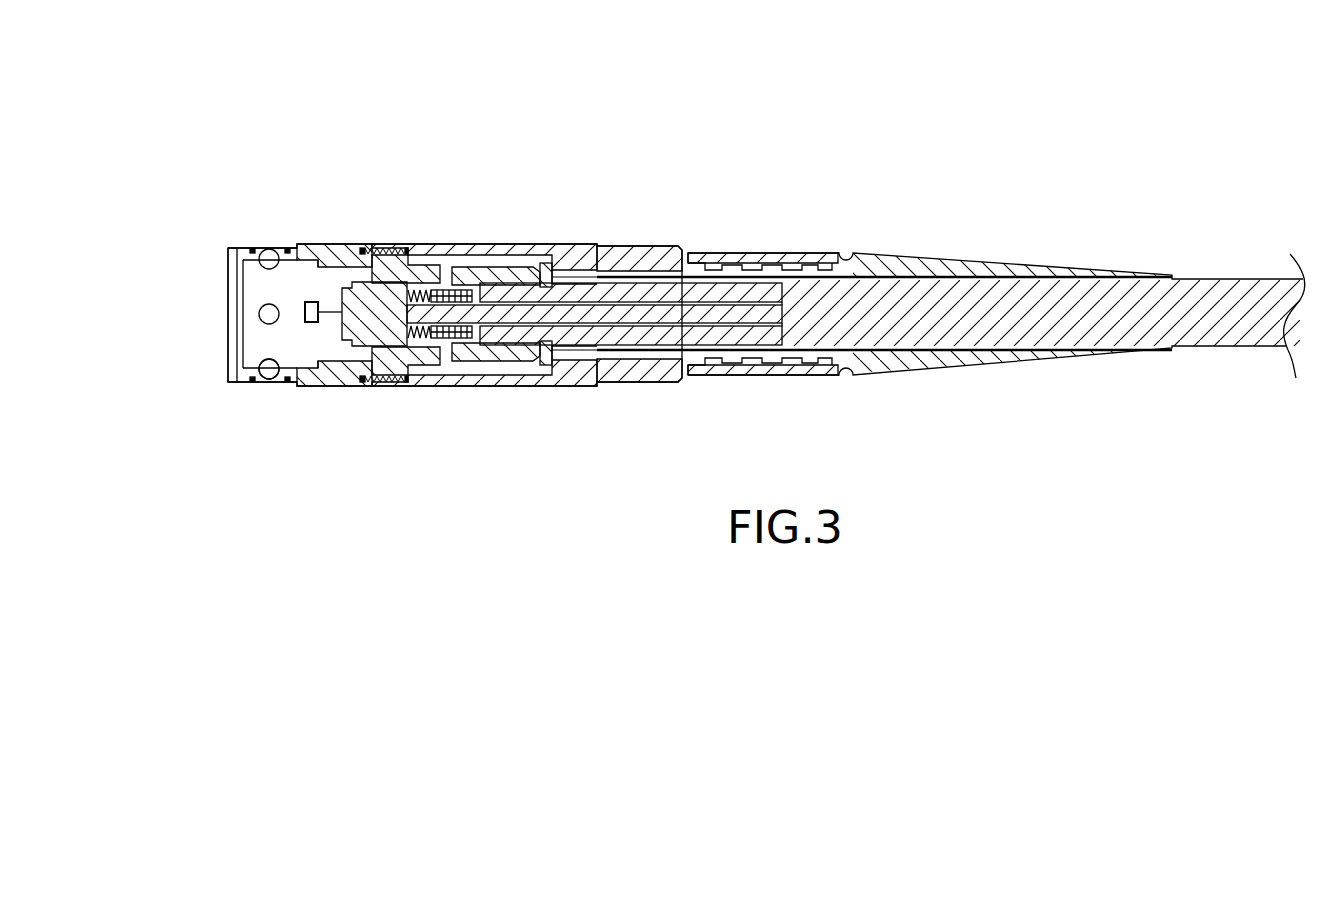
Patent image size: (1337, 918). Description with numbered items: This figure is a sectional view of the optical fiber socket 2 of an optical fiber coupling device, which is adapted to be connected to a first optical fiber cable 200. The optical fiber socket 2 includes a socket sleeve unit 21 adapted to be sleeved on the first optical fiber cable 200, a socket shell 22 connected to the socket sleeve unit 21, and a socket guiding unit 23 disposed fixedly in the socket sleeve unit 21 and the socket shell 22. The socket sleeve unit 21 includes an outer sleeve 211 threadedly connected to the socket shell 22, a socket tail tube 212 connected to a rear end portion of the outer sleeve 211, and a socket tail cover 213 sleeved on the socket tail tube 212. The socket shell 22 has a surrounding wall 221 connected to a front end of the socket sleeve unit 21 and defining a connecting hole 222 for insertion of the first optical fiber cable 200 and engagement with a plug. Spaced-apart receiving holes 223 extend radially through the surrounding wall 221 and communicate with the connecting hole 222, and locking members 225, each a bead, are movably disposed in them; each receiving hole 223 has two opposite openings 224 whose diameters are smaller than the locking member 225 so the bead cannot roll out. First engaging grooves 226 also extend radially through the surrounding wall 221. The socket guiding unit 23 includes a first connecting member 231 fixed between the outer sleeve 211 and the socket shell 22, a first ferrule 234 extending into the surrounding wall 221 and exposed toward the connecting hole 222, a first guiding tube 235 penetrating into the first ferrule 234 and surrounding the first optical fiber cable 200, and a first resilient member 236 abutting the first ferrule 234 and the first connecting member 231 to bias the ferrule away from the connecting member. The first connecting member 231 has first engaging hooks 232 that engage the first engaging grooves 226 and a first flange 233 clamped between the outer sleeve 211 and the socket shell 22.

The optical fiber socket 2 is at (687, 170).
The socket sleeve unit 21 is at (924, 252).
The socket shell 22 is at (231, 238).
The socket guiding unit 23 is at (495, 183).
The first optical fiber cable 200 is at (1237, 279).
The outer sleeve 211 is at (581, 246).
The socket tail tube 212 is at (772, 253).
The socket tail cover 213 is at (1005, 262).
The surrounding wall 221 is at (343, 388).
The connecting hole 222 is at (237, 317).
The receiving hole 223 is at (275, 239).
The opening 224 is at (283, 247).
The locking member 225 is at (268, 312).
The first engaging groove 226 is at (448, 288).
The first connecting member 231 is at (547, 364).
The first engaging hook 232 is at (489, 267).
The first flange 233 is at (543, 263).
The first ferrule 234 is at (373, 282).
The first guiding tube 235 is at (403, 375).
The first resilient member 236 is at (472, 289).